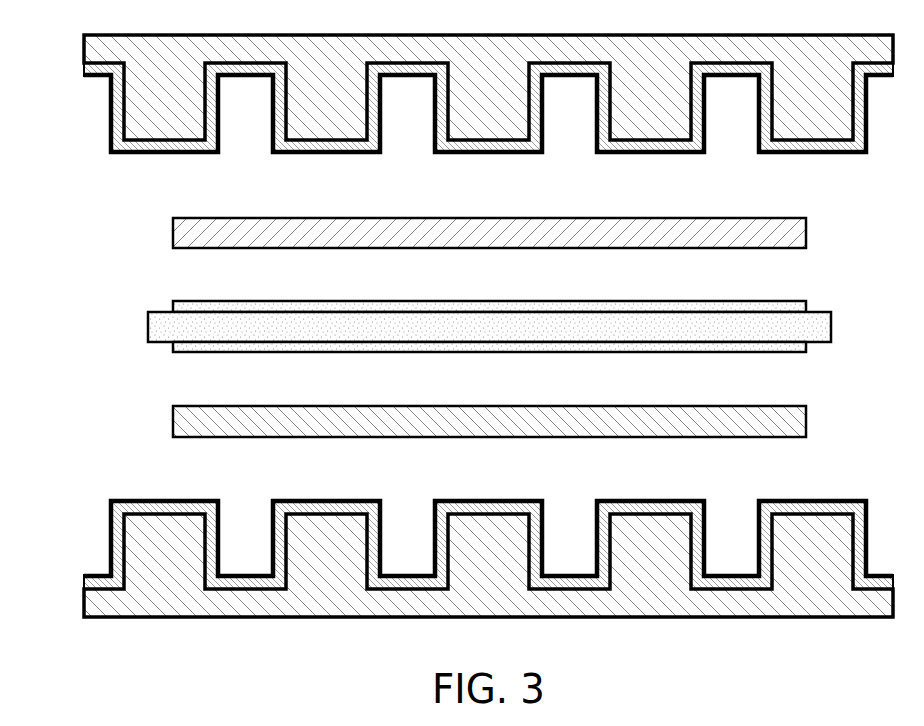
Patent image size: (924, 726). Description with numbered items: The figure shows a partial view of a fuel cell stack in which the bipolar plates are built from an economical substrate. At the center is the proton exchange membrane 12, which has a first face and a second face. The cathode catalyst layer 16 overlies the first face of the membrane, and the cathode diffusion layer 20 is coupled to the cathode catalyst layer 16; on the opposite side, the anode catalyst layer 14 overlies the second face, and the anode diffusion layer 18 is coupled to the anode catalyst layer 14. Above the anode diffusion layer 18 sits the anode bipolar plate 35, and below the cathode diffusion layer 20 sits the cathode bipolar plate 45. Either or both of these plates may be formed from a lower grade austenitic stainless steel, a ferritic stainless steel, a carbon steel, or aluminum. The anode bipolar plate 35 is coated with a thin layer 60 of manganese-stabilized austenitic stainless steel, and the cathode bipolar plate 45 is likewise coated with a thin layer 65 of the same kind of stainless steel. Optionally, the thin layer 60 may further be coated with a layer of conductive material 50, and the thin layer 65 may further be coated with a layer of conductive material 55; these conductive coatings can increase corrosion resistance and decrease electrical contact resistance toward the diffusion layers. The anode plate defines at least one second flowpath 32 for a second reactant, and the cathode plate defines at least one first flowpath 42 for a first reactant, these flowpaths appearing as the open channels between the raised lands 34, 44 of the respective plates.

The proton exchange membrane 12 is at (148, 323).
The anode catalyst layer 14 is at (172, 308).
The cathode catalyst layer 16 is at (172, 347).
The anode diffusion layer 18 is at (172, 233).
The cathode diffusion layer 20 is at (172, 417).
The second flowpath 32 is at (262, 113).
The land of anode plate 34 is at (158, 117).
The anode bipolar plate 35 is at (83, 44).
The first flowpath 42 is at (262, 563).
The land of cathode plate 44 is at (165, 537).
The cathode bipolar plate 45 is at (83, 607).
The layer of conductive material 50 is at (83, 76).
The layer of conductive material 55 is at (83, 577).
The thin layer 60 is at (83, 66).
The thin layer 65 is at (83, 584).